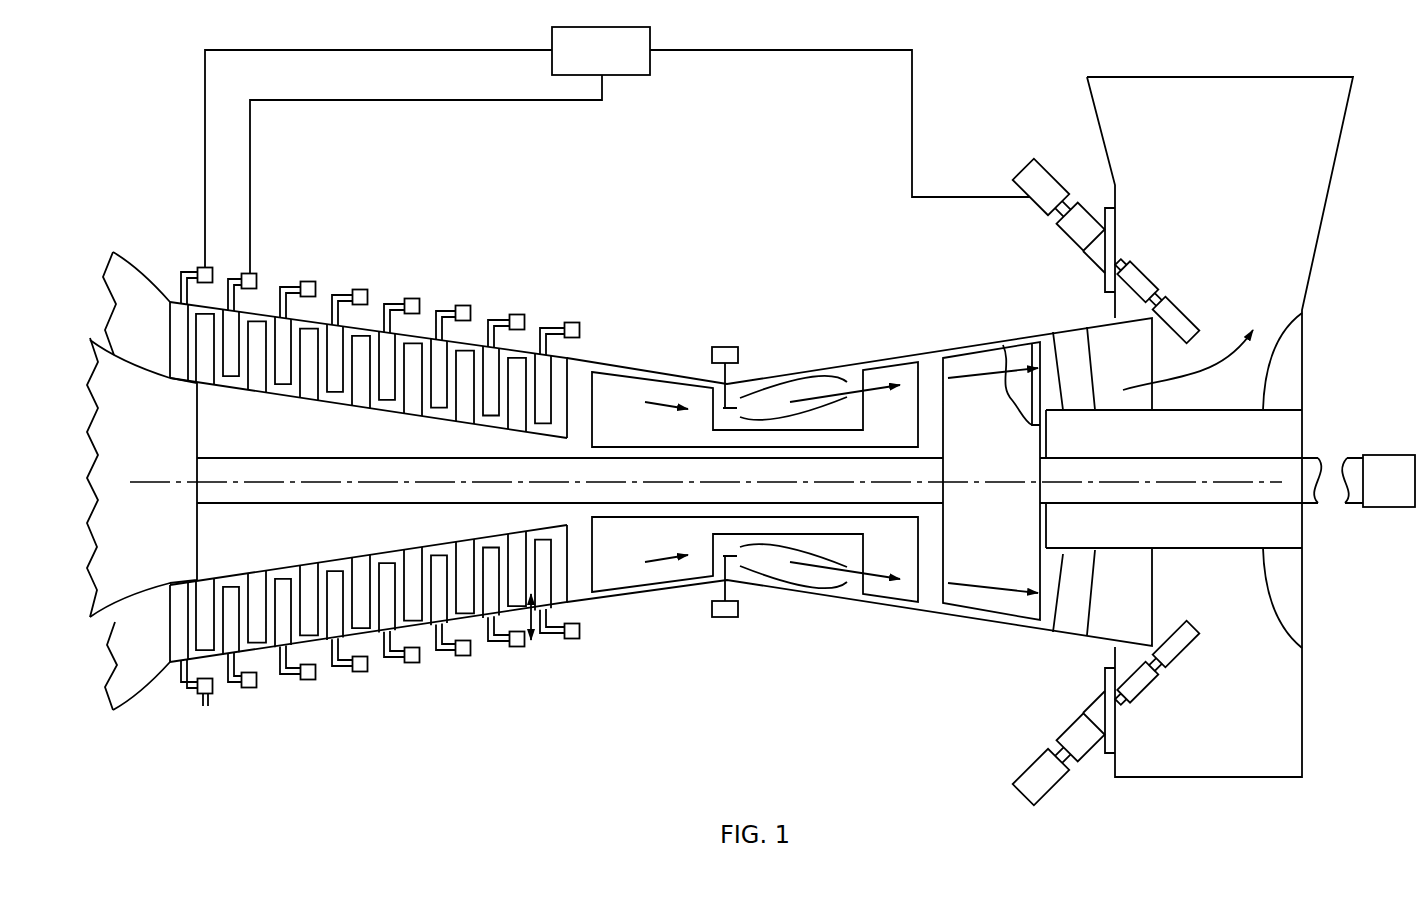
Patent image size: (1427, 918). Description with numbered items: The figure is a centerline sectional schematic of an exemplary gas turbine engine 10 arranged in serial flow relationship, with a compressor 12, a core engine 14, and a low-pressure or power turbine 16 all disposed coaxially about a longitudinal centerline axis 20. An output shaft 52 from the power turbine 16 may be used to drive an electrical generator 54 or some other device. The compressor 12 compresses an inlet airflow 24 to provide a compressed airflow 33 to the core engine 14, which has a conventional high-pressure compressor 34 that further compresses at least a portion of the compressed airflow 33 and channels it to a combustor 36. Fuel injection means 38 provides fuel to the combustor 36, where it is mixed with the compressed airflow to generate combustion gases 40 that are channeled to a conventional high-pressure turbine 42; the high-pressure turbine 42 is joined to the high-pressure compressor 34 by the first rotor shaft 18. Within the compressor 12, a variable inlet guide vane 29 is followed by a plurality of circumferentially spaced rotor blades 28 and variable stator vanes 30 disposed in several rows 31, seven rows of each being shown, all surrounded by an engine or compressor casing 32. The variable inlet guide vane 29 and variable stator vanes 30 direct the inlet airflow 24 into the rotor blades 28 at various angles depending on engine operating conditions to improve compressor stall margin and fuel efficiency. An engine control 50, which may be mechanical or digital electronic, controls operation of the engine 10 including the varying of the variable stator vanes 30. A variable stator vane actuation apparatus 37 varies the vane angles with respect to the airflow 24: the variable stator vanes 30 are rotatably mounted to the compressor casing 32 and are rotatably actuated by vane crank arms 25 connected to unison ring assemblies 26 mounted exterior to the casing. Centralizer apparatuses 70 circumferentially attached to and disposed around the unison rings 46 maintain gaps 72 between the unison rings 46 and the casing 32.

The gas turbine engine 10 is at (826, 278).
The compressor 12 is at (199, 423).
The core engine 14 is at (862, 600).
The power turbine 16 is at (971, 473).
The first rotor shaft 18 is at (268, 505).
The longitudinal centerline axis 20 is at (172, 488).
The inlet airflow 24 is at (152, 347).
The vane crank arms 25 is at (340, 664).
The unison ring assemblies 26 is at (340, 288).
The rotor blades 28 is at (205, 378).
The variable inlet guide vane 29 is at (178, 302).
The variable stator vanes 30 is at (232, 592).
The rows 31 is at (455, 430).
The compressor casing 32 is at (374, 316).
The compressed airflow 33 is at (652, 400).
The high-pressure compressor 34 is at (599, 443).
The combustor 36 is at (785, 390).
The variable stator vane actuation apparatus 37 is at (520, 307).
The fuel injection means 38 is at (723, 346).
The combustion gases 40 is at (846, 380).
The high-pressure turbine 42 is at (879, 428).
The unison rings 46 is at (355, 294).
The engine control 50 is at (587, 64).
The output shaft 52 is at (1120, 458).
The electrical generator 54 is at (1375, 494).
The centralizer apparatuses 70 is at (203, 672).
The gaps 72 is at (532, 607).